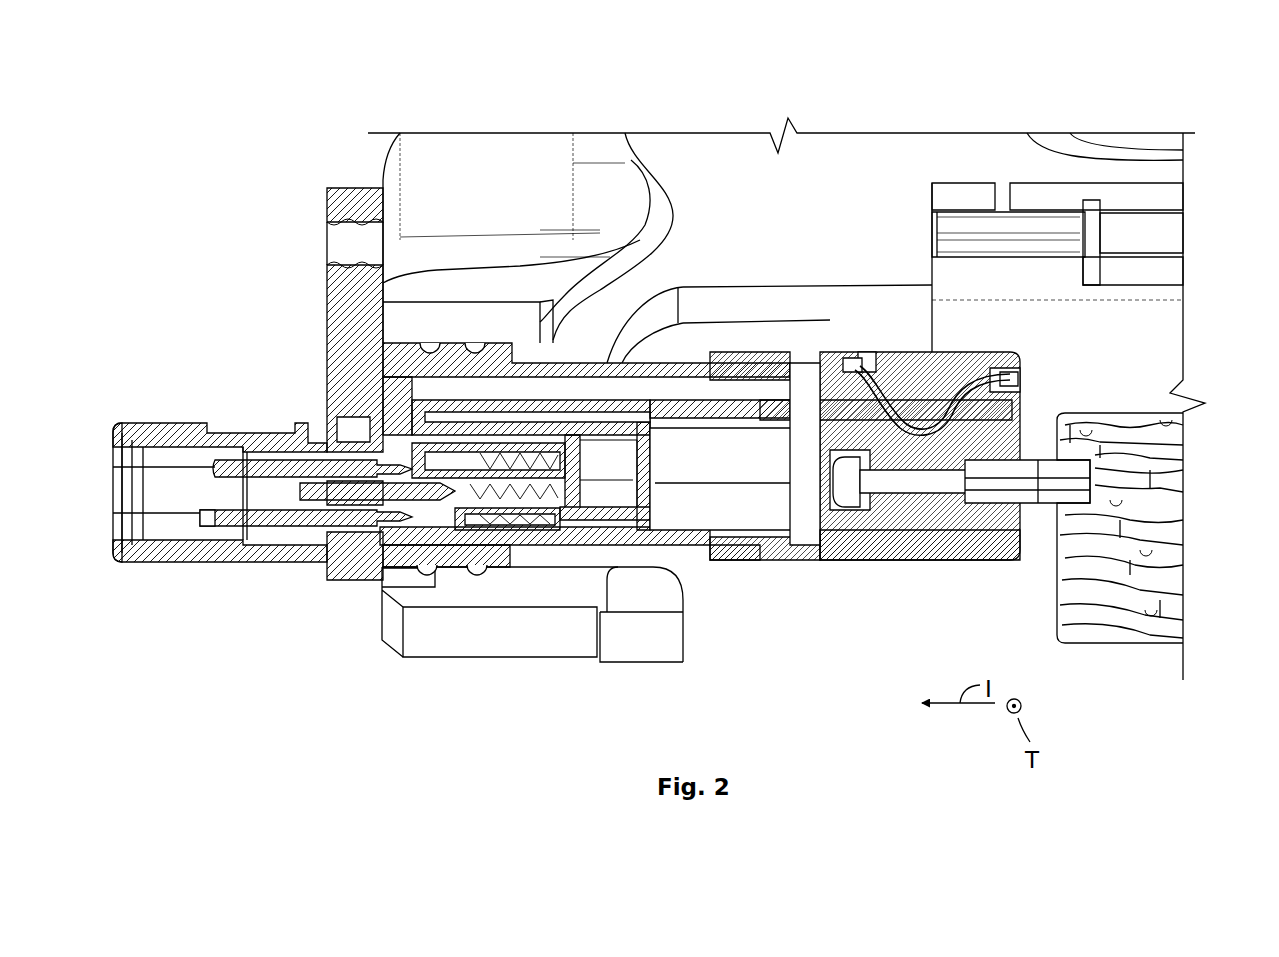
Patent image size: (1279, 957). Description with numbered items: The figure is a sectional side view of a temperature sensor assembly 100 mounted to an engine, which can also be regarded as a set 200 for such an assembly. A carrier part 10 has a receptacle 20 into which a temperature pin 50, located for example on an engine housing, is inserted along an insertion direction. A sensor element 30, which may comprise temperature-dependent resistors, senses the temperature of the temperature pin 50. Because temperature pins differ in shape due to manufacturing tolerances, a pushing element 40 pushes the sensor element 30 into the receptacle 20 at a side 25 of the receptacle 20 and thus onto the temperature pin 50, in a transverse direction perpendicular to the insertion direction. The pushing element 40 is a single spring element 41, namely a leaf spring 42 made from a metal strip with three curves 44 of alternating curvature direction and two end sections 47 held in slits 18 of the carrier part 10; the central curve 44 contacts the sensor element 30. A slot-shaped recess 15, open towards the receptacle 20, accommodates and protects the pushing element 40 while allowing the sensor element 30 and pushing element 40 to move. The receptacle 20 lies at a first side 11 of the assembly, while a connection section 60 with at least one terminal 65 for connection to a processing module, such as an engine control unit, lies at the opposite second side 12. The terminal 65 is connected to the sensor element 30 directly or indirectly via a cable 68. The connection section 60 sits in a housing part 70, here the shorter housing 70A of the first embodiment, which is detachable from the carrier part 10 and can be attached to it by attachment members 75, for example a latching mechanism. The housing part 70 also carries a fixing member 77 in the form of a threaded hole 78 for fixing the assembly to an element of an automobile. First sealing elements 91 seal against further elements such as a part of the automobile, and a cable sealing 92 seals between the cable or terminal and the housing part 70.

The temperature sensor assembly 100 is at (272, 47).
The set 200 is at (203, 127).
The cable sealing 92 is at (535, 470).
The curve 44 is at (820, 372).
The end section 47 is at (855, 362).
The slit 18 is at (862, 350).
The fixing member 77 is at (332, 240).
The threaded hole 78 is at (332, 262).
The recess 15 is at (935, 348).
The first side 11 is at (1035, 333).
The sensor element 30 is at (933, 403).
The pushing element 40 is at (985, 380).
The housing 70A is at (213, 366).
The terminal 65 is at (228, 468).
The spring element 41 is at (869, 357).
The connection section 60 is at (281, 614).
The second side 12 is at (312, 630).
The housing part 70 is at (340, 574).
The first sealing element 91 is at (425, 572).
The cable 68 is at (640, 517).
The attachment member 75 is at (722, 540).
The leaf spring 42 is at (825, 445).
The side of the receptacle 25 is at (862, 512).
The temperature pin 50 is at (880, 492).
The receptacle 20 is at (923, 450).
The carrier part 10 is at (858, 600).